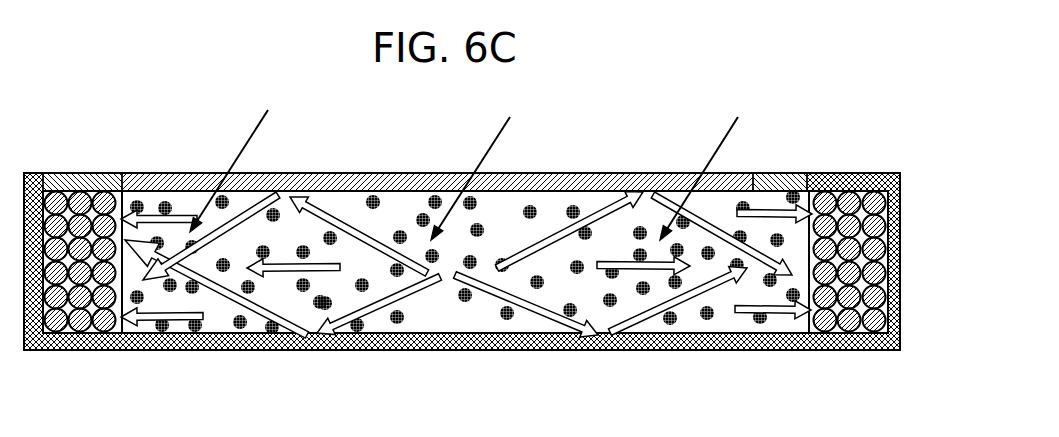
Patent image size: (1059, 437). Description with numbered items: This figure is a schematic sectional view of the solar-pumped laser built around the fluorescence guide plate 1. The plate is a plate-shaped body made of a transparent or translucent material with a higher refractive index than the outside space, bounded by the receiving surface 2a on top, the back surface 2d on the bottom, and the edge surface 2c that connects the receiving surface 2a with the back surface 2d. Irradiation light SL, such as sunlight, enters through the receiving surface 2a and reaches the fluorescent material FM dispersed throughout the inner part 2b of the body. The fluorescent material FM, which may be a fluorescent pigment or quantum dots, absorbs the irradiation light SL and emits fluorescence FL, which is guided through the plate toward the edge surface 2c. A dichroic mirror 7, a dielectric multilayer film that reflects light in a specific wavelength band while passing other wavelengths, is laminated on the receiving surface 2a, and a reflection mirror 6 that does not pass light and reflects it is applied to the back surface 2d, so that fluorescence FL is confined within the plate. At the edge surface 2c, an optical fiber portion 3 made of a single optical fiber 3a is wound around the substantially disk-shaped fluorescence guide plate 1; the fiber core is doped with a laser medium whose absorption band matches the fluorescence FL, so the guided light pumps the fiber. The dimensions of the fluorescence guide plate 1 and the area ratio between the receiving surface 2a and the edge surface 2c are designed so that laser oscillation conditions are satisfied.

The fluorescence guide plate 1 is at (357, 178).
The receiving surface 2a is at (557, 173).
The inner part 2b is at (468, 326).
The edge surface 2c is at (143, 188).
The back surface 2d is at (536, 330).
The optical fiber portion 3 is at (873, 146).
The optical fiber 3a is at (23, 330).
The reflection mirror 6 is at (117, 349).
The dichroic mirror 7 is at (452, 173).
The fluorescent material FM is at (524, 210).
The fluorescence FL is at (250, 205).
The irradiation light SL is at (474, 161).